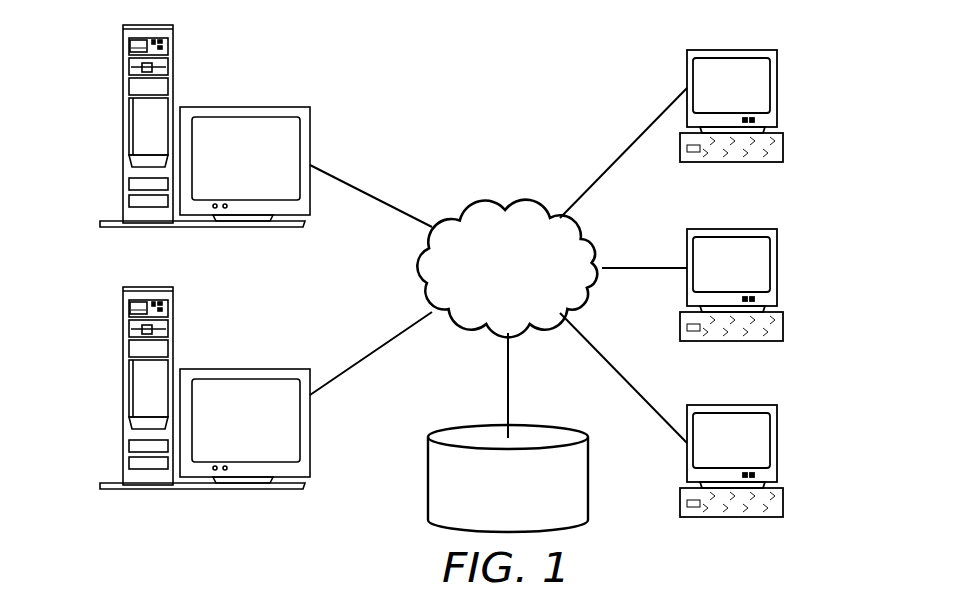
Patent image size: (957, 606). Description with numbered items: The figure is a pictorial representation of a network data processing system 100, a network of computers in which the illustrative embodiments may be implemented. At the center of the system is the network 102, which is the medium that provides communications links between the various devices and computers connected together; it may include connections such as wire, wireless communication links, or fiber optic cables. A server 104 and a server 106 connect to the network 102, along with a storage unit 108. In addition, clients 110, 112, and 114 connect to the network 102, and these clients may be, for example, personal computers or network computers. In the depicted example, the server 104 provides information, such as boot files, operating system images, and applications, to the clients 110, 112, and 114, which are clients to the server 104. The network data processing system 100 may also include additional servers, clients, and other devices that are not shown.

The network data processing system 100 is at (574, 76).
The network 102 is at (470, 205).
The server 104 is at (122, 125).
The server 106 is at (122, 387).
The storage unit 108 is at (428, 490).
The client 110 is at (777, 88).
The client 112 is at (777, 267).
The client 114 is at (777, 443).